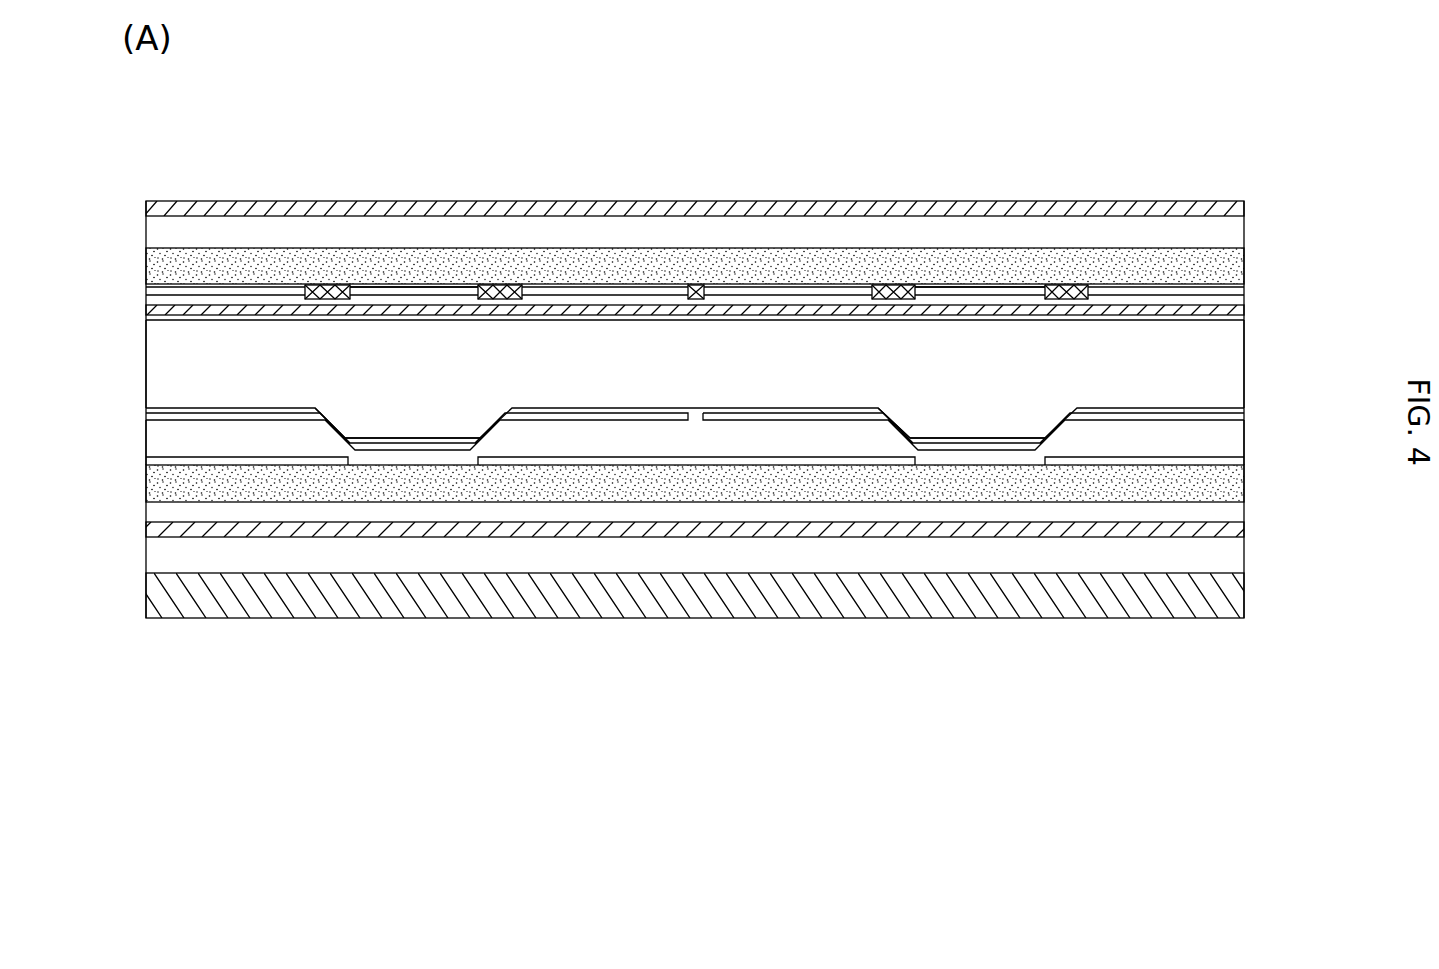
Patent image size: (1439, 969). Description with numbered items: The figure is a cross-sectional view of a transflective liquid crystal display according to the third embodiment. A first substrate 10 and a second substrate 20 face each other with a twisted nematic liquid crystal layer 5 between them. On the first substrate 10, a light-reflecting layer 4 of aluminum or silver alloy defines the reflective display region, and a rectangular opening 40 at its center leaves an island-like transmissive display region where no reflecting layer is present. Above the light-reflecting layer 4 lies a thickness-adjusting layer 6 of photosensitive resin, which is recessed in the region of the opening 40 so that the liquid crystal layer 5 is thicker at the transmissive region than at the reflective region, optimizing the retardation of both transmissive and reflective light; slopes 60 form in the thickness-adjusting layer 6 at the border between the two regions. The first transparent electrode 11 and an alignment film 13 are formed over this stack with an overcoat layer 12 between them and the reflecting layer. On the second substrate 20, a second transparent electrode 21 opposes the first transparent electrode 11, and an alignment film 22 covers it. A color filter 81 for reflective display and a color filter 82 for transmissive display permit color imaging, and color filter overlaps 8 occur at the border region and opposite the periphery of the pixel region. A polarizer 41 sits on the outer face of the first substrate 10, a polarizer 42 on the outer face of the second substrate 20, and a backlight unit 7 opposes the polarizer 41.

The light-reflecting layer 4 is at (1244, 458).
The liquid crystal layer 5 is at (1244, 366).
The thickness-adjusting layer 6 is at (1244, 443).
The backlight unit 7 is at (1244, 602).
The color filter overlap 8 is at (690, 285).
The first substrate 10 is at (1244, 484).
The first transparent electrode 11 is at (1244, 417).
The overcoat layer 12 is at (1244, 300).
The alignment film 13 is at (1244, 406).
The second substrate 20 is at (1244, 258).
The second transparent electrode 21 is at (1244, 310).
The alignment film 22 is at (1244, 318).
The opening 40 is at (428, 438).
The polarizer 41 is at (1244, 532).
The polarizer 42 is at (1244, 201).
The slope 60 is at (330, 423).
The color filter for reflective display 81 is at (223, 290).
The color filter for transmissive display 82 is at (417, 287).